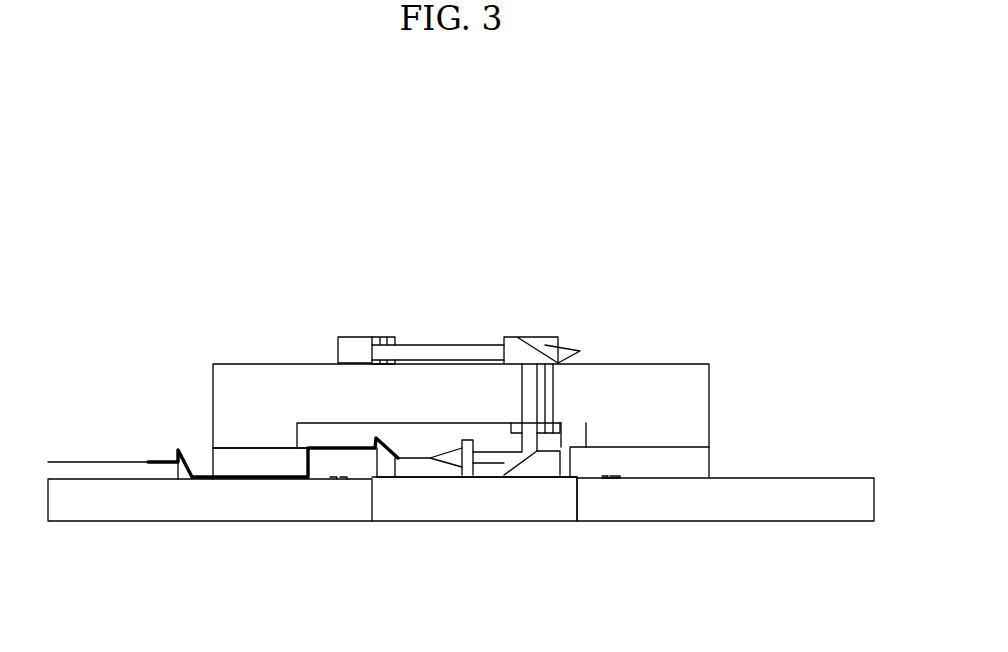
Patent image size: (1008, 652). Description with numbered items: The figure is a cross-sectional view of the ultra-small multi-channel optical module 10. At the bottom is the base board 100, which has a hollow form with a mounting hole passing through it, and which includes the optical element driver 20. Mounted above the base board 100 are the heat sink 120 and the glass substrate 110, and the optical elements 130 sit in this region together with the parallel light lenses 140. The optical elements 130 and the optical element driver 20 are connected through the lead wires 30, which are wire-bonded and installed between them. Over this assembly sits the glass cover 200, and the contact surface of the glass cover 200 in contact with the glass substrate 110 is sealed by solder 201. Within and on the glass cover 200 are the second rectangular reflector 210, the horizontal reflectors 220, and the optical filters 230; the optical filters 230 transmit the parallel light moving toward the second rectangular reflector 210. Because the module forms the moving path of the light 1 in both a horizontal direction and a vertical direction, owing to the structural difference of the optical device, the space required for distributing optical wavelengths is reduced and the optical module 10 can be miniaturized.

The light 1 is at (445, 353).
The ultra-small multi-channel optical module 10 is at (473, 144).
The optical element driver 20 is at (93, 467).
The lead wires 30 is at (188, 475).
The base board 100 is at (735, 522).
The glass substrate 110 is at (229, 465).
The heat sink 120 is at (383, 522).
The optical elements 130 is at (413, 468).
The parallel light lenses 140 is at (468, 470).
The glass cover 200 is at (247, 363).
The solder 201 is at (608, 478).
The second rectangular reflector 210 is at (532, 347).
The horizontal reflectors 220 is at (357, 316).
The optical filters 230 is at (588, 430).